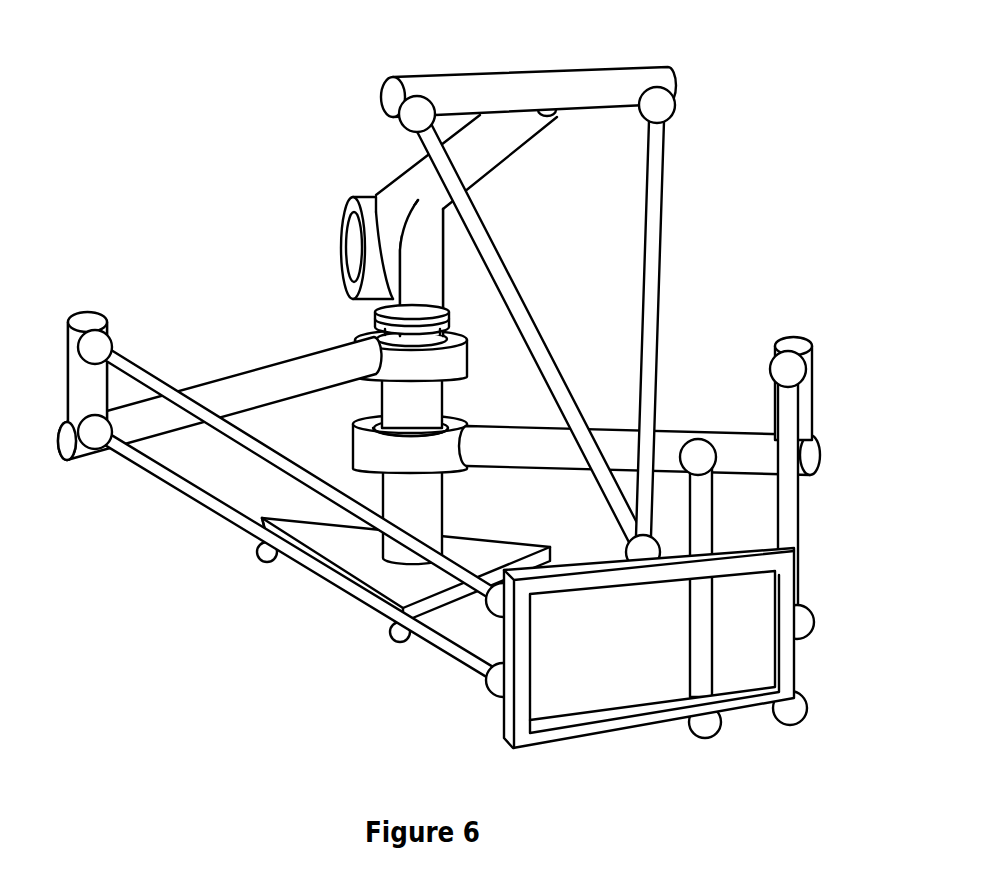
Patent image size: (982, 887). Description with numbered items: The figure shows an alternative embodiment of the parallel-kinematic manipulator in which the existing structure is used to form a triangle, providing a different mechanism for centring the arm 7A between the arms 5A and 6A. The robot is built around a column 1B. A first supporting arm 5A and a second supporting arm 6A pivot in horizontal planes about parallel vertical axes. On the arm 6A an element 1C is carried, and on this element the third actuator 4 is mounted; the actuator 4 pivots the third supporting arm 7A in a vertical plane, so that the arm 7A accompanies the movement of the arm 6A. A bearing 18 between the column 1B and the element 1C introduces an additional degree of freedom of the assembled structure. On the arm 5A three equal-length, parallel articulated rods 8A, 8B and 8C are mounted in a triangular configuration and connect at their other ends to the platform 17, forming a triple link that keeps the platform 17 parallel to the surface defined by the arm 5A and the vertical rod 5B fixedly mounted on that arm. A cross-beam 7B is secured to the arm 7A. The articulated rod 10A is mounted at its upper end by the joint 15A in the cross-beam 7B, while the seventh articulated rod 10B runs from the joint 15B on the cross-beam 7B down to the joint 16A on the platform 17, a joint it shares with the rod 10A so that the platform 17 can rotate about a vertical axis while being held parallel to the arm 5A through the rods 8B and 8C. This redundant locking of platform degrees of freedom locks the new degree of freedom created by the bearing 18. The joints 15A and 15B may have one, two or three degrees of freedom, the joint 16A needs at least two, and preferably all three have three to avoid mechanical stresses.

The column 1B is at (423, 402).
The element 1C is at (423, 262).
The third actuator 4 is at (350, 208).
The first supporting arm 5A is at (618, 443).
The vertical rod 5B is at (807, 353).
The second supporting arm 6A is at (240, 397).
The third supporting arm 7A is at (417, 193).
The cross-beam 7B is at (595, 87).
The articulated rod 8A is at (790, 485).
The articulated rod 8B is at (775, 513).
The articulated rod 8C is at (702, 608).
The articulated rod 10A is at (513, 305).
The seventh articulated rod 10B is at (657, 295).
The joint 15A is at (408, 110).
The joint 15B is at (667, 107).
The joint 16A is at (640, 555).
The platform 17 is at (610, 728).
The bearing 18 is at (373, 313).